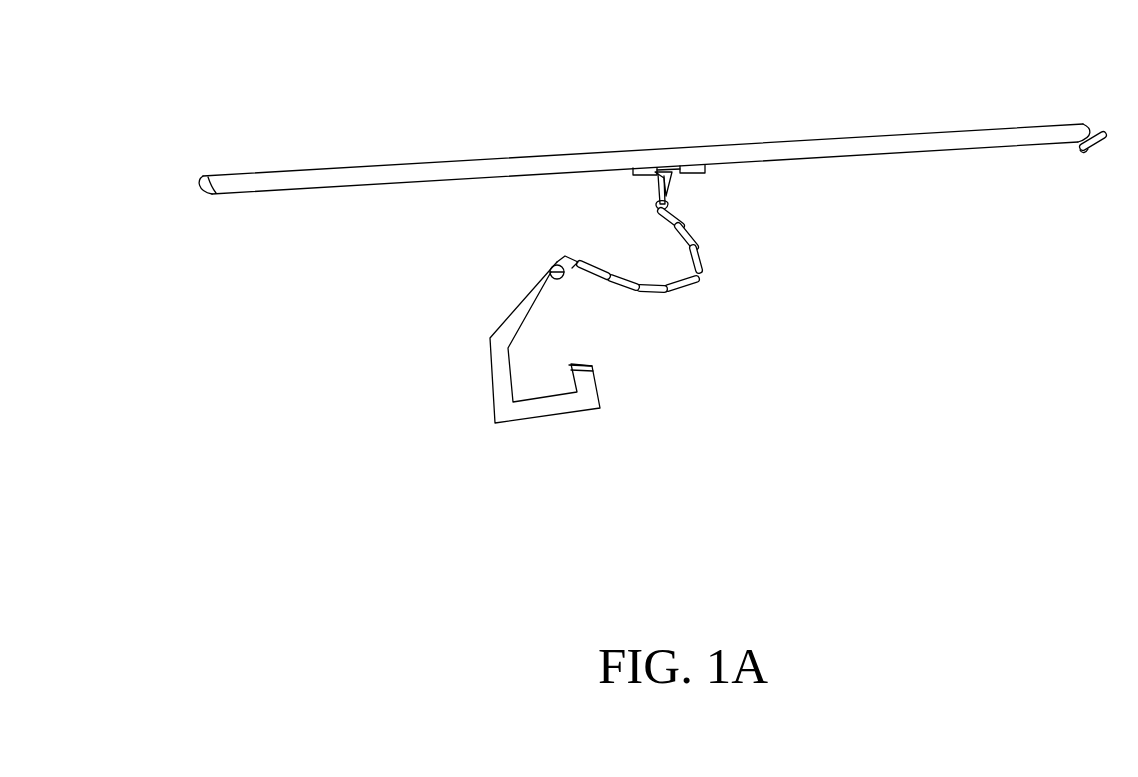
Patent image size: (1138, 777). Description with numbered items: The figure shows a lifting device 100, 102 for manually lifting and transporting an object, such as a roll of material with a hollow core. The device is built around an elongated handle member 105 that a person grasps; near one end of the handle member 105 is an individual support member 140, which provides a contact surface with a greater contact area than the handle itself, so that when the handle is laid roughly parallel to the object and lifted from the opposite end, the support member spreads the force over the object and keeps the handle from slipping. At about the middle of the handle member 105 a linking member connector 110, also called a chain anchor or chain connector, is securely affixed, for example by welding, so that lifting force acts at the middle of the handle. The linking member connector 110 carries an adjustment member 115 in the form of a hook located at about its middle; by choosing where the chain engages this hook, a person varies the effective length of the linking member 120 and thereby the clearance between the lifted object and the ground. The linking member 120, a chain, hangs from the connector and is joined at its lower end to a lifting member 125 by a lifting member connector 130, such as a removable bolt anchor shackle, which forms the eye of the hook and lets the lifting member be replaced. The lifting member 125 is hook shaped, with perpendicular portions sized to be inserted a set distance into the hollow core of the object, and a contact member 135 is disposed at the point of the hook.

The lifting device 100 is at (651, 229).
The lifting device 102 is at (918, 83).
The handle member 105 is at (320, 161).
The linking member connector 110 is at (702, 175).
The adjustment member 115 is at (672, 202).
The linking member 120 is at (702, 282).
The lifting member 125 is at (493, 419).
The lifting member connector 130 is at (555, 264).
The contact member 135 is at (592, 364).
The individual support member 140 is at (1083, 153).